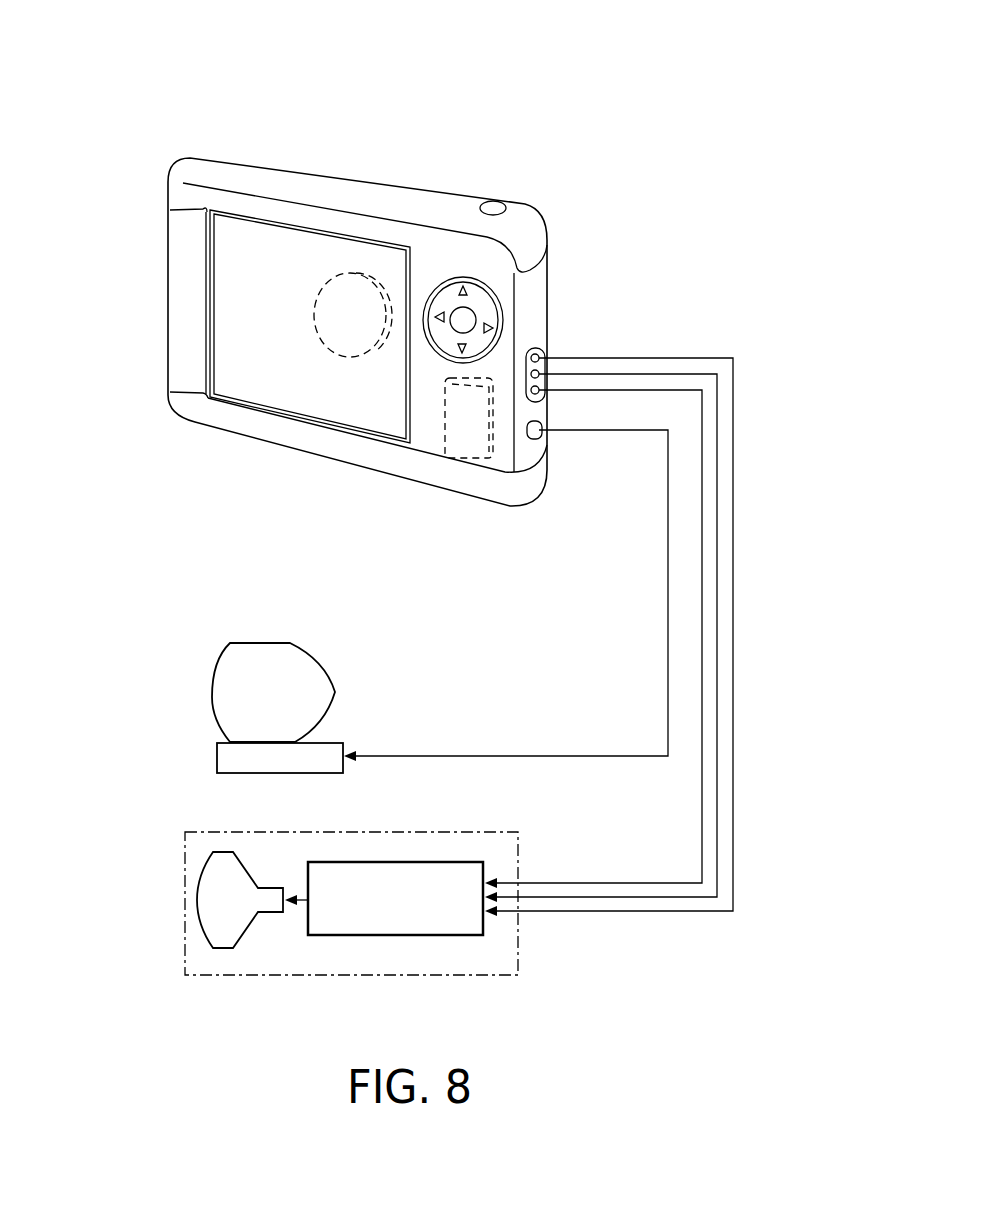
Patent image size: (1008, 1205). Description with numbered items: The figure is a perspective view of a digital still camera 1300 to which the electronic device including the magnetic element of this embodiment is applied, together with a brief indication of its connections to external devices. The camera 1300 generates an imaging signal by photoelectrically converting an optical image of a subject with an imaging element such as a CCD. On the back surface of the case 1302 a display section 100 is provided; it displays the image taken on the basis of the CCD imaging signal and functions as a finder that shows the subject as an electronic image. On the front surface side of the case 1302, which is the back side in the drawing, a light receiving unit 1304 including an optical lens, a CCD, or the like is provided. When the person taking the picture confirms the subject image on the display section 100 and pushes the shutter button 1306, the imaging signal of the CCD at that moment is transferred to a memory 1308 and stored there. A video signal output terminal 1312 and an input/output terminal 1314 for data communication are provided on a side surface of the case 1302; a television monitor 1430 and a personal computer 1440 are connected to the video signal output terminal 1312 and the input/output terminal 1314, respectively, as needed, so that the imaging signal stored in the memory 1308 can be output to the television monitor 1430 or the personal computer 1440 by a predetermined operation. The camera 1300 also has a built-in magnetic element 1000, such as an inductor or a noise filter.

The digital still camera 1300 is at (444, 140).
The case 1302 is at (191, 200).
The light receiving unit 1304 is at (347, 270).
The shutter button 1306 is at (503, 200).
The memory 1308 is at (453, 450).
The video signal output terminal 1312 is at (533, 360).
The input/output terminal for data communication 1314 is at (538, 437).
The display section 100 is at (288, 375).
The magnetic element 1000 is at (423, 408).
The personal computer 1440 is at (218, 668).
The television monitor 1430 is at (190, 894).